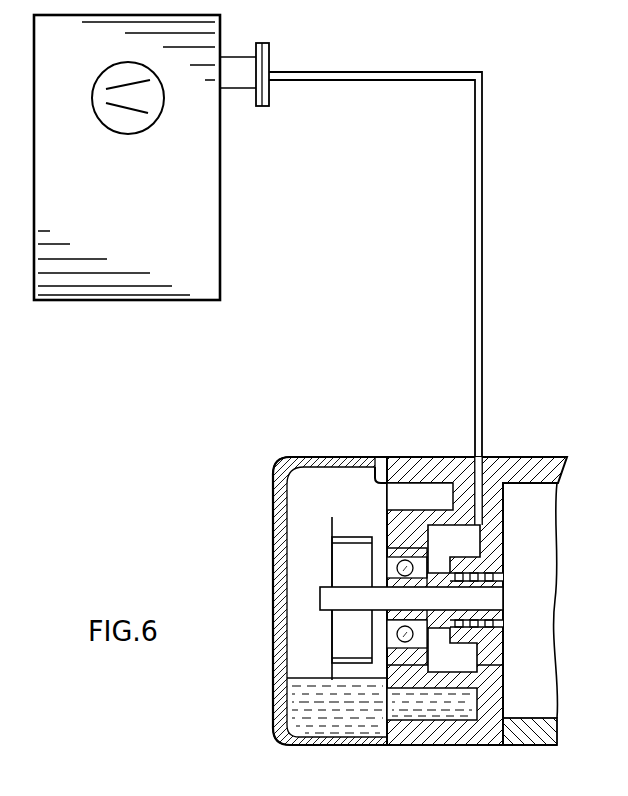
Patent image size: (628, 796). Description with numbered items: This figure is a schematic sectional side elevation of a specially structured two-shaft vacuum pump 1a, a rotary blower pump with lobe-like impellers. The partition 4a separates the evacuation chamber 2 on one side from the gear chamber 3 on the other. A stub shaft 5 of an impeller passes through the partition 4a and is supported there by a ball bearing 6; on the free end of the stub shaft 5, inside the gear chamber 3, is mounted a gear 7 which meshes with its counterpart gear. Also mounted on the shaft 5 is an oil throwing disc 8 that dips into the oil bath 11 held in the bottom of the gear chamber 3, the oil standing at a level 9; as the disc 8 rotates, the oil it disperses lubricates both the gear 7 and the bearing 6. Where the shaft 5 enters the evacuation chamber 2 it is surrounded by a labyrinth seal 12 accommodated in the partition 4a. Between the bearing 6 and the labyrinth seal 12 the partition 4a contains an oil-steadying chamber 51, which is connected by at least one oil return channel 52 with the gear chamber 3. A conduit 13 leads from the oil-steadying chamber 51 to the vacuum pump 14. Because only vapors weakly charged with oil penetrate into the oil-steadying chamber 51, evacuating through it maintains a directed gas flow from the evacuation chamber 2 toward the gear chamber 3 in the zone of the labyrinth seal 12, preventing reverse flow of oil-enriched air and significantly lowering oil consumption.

The vacuum pump 14 is at (221, 238).
The conduit 13 is at (477, 296).
The two-shaft vacuum pump 1a is at (416, 447).
The gear chamber 3 is at (314, 504).
The oil throwing disc 8 is at (331, 527).
The gear 7 is at (343, 563).
The ball bearing 6 is at (396, 549).
The stub shaft 5 is at (320, 604).
The level 9 is at (314, 676).
The oil bath 11 is at (384, 709).
The oil-steadying chamber 51 is at (460, 555).
The oil return channel 52 is at (452, 650).
The labyrinth seal 12 is at (506, 577).
The evacuation chamber 2 is at (537, 536).
The partition 4a is at (488, 724).